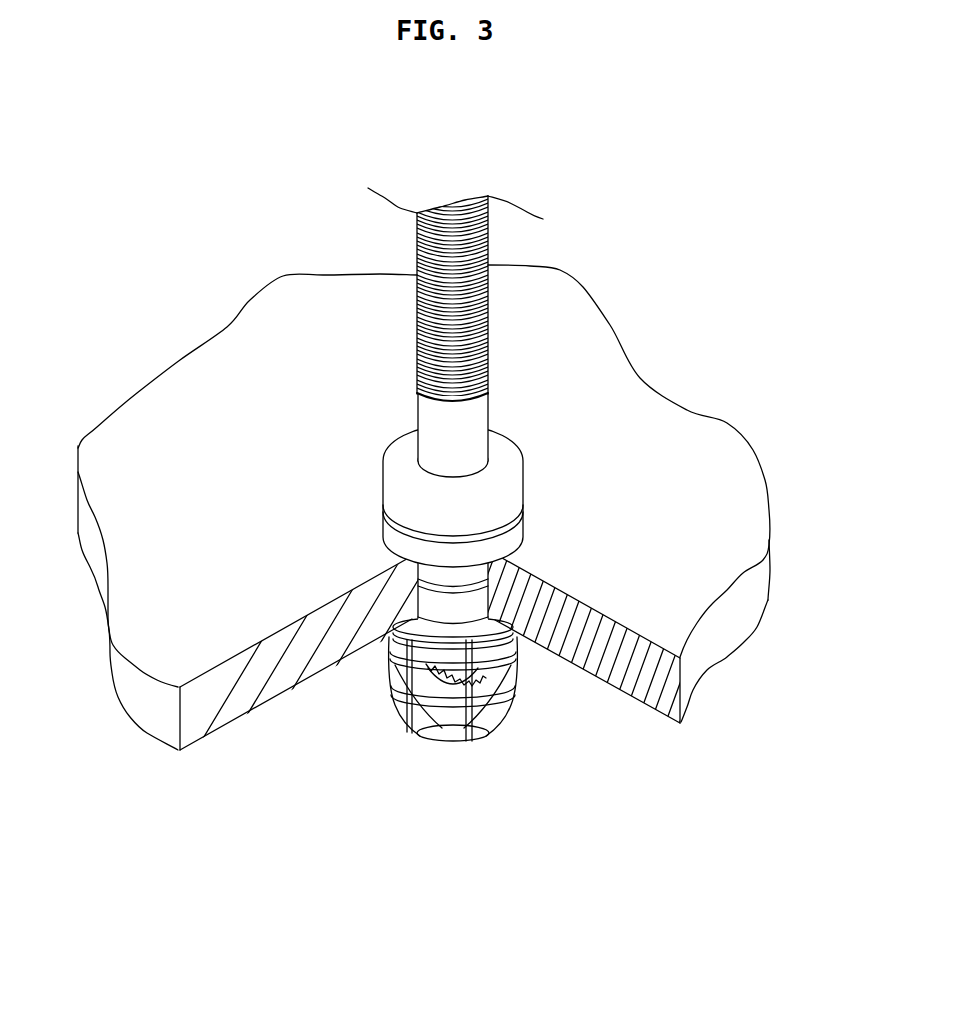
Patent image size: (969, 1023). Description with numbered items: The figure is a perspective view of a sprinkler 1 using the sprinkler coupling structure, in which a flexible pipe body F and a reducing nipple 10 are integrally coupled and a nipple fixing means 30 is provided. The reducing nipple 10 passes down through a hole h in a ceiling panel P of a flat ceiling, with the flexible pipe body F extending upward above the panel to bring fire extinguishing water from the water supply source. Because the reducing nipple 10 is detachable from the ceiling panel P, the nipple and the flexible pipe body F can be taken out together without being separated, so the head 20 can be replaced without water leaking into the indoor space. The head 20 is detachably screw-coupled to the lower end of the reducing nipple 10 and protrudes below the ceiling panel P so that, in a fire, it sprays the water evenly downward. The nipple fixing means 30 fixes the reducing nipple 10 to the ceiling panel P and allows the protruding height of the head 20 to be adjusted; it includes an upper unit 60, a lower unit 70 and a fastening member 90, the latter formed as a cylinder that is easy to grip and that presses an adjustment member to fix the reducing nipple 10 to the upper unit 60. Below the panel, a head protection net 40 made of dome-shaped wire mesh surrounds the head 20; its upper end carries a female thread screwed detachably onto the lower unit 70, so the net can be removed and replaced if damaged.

The sprinkler 1 is at (454, 492).
The reducing nipple 10 is at (505, 445).
The head 20 is at (498, 653).
The nipple fixing means 30 is at (410, 589).
The head protection net 40 is at (474, 735).
The upper unit 60 is at (383, 517).
The lower unit 70 is at (416, 602).
The fastening member 90 is at (525, 478).
The flexible pipe body F is at (400, 325).
The ceiling panel P is at (707, 467).
The hole h is at (462, 622).